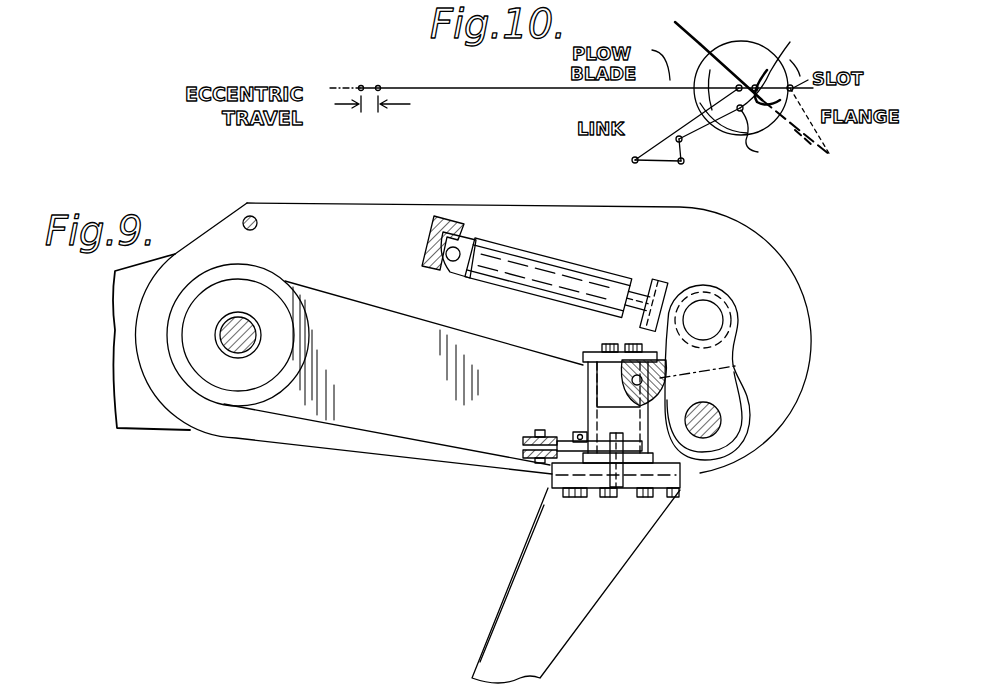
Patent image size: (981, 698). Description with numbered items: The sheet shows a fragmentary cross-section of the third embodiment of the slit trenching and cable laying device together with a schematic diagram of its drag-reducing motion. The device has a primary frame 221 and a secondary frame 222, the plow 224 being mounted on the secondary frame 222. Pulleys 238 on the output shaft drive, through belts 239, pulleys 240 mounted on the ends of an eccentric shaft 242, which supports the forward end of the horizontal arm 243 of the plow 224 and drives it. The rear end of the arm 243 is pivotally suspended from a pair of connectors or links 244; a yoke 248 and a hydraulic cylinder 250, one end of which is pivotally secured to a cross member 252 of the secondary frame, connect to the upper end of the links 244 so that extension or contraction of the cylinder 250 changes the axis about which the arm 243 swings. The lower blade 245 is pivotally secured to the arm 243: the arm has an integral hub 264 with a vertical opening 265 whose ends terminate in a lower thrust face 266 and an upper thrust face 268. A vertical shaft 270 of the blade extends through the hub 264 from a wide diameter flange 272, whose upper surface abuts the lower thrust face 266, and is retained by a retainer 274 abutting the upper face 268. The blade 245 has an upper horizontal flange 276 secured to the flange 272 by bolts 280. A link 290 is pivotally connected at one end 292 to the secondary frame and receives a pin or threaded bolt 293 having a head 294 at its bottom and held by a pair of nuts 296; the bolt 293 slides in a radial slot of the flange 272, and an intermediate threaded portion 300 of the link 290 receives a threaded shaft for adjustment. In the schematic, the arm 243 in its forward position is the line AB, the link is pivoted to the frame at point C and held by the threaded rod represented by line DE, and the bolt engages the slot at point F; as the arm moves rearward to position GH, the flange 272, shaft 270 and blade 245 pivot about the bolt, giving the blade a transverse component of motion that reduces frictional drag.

In FIG. 9, the primary frame 221 is at (107, 422).
In FIG. 9, the secondary frame 222 is at (346, 210).
In FIG. 9, the plow 224 is at (594, 627).
In FIG. 9, the eccentric shaft 242 is at (248, 341).
In FIG. 9, the horizontal arm 243 is at (312, 403).
In FIG. 9, the connectors or links 244 is at (738, 335).
In FIG. 9, the lower blade 245 is at (560, 612).
In FIG. 9, the yoke 248 is at (680, 292).
In FIG. 9, the hydraulic cylinder 250 is at (503, 252).
In FIG. 9, the cross member 252 is at (430, 245).
In FIG. 9, the hub 264 is at (660, 380).
In FIG. 9, the vertical opening 265 is at (736, 365).
In FIG. 9, the lower thrust face 266 is at (650, 470).
In FIG. 9, the upper thrust face 268 is at (583, 365).
In FIG. 9, the vertical shaft 270 is at (620, 360).
In FIG. 9, the flange 272 is at (548, 471).
In FIG. 9, the retainer 274 is at (590, 352).
In FIG. 9, the upper horizontal flange 276 is at (548, 495).
In FIG. 9, the bolts 280 is at (565, 559).
In FIG. 9, the link 290 is at (527, 436).
In FIG. 9, the end of link 292 is at (550, 467).
In FIG. 9, the pin or threaded bolt 293 is at (586, 392).
In FIG. 9, the head 294 is at (568, 493).
In FIG. 9, the nuts 296 is at (685, 468).
In FIG. 9, the intermediate threaded portion 300 is at (575, 432).
In FIG. 10, the pulleys 238 is at (222, 14).
In FIG. 10, the belts 239 is at (291, 14).
In FIG. 10, the pulleys 240 is at (361, 9).
In FIG. 10, the point A is at (360, 87).
In FIG. 10, the point B is at (736, 90).
In FIG. 10, the point C is at (682, 139).
In FIG. 10, the point D is at (686, 164).
In FIG. 10, the point E is at (705, 123).
In FIG. 10, the point F is at (769, 157).
In FIG. 10, the point G is at (378, 87).
In FIG. 10, the point H is at (774, 60).